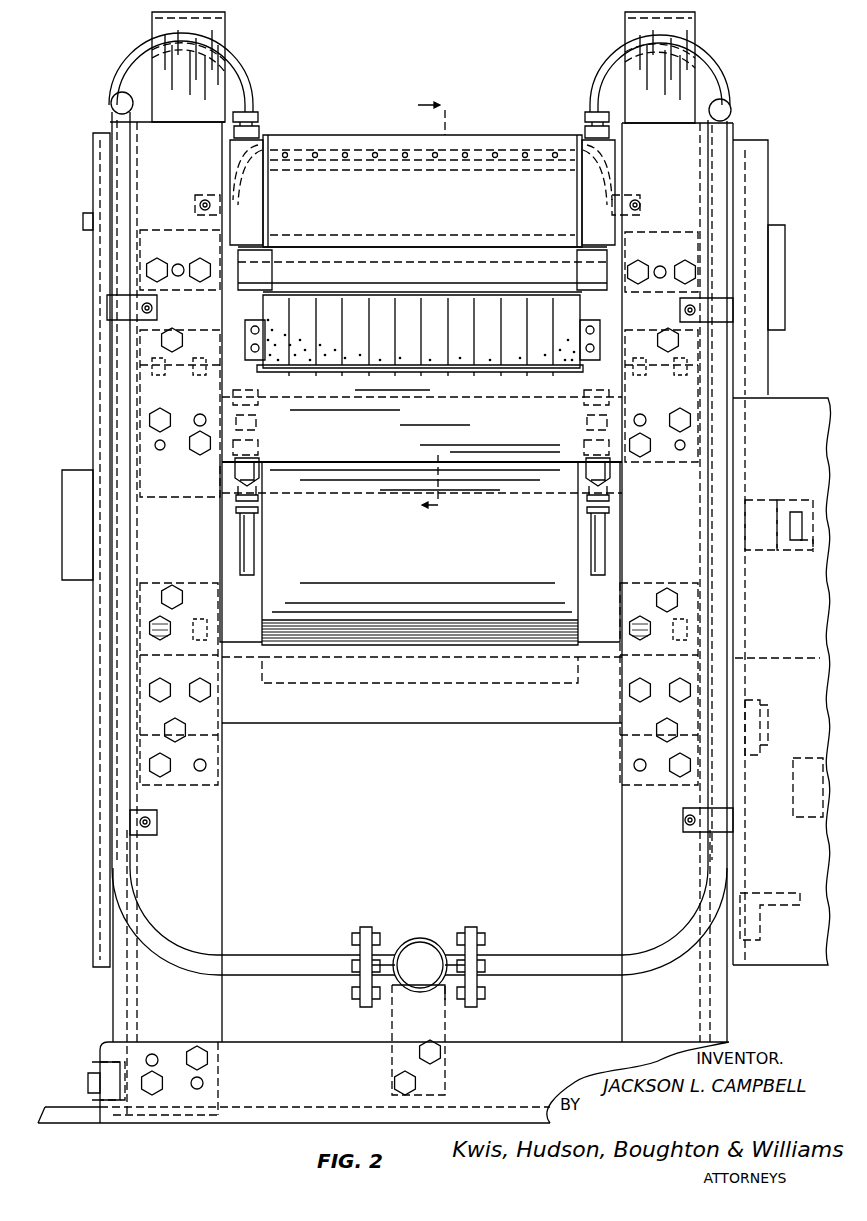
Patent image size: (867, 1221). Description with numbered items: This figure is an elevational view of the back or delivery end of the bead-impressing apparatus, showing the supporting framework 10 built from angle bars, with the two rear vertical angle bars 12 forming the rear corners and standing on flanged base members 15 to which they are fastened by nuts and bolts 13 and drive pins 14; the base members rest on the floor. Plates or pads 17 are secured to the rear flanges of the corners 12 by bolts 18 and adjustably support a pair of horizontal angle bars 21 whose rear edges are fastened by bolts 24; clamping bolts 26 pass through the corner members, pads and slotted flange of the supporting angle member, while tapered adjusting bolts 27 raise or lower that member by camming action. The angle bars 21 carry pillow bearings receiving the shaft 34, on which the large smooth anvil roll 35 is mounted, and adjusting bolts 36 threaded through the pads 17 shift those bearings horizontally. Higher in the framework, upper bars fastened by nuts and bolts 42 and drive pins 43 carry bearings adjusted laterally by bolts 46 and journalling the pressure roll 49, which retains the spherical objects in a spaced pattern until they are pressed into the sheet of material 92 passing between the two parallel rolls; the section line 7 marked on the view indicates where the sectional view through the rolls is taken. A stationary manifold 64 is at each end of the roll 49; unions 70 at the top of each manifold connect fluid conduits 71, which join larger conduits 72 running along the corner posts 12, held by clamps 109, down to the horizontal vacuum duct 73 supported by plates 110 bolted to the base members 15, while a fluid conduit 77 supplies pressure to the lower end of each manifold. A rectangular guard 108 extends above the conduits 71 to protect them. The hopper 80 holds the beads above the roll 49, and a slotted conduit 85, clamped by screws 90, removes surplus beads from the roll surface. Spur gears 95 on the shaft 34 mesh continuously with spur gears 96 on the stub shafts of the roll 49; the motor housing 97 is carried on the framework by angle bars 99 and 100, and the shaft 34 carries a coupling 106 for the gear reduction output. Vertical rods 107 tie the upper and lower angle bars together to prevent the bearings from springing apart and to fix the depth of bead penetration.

The supporting framework 10 is at (108, 1000).
The rear vertical angle bars 12 is at (220, 1022).
The nuts and bolts 13 is at (210, 1058).
The drive pins 14 is at (152, 1053).
The flanged base members 15 is at (318, 1042).
The plates or pads 17 is at (207, 772).
The bolts 18 is at (165, 778).
The angle bars 21 is at (392, 724).
The bolts 24 is at (212, 645).
The bolts 26 is at (212, 690).
The adjusting bolts 27 is at (187, 730).
The shaft 34 is at (245, 576).
The smooth surface drum or roll 35 is at (578, 620).
The adjusting bolts 36 is at (180, 586).
The nuts and bolts 42 is at (140, 392).
The drive pins 43 is at (158, 452).
The adjusting bolts 46 is at (184, 340).
The roll 49 is at (483, 295).
The stationary manifold 64 is at (230, 160).
The unions 70 is at (260, 122).
The fluid conduits 71 is at (252, 75).
The conduits 72 is at (150, 908).
The horizontally extending duct or conduit 73 is at (428, 940).
The fluid conduit 77 is at (258, 580).
The hopper 80 is at (398, 207).
The conduit 85 is at (490, 160).
The screws 90 is at (352, 158).
The sheet of material 92 is at (483, 375).
The spur gears 95 is at (92, 428).
The spur gears 96 is at (96, 186).
The housing and support 97 is at (780, 966).
The angle bar 99 is at (766, 692).
The angle bar 100 is at (780, 893).
The coupling 106 is at (792, 505).
The vertical bolts or rods 107 is at (813, 553).
The rectangular guard 108 is at (226, 28).
The clamps 109 is at (157, 836).
The plates 110 is at (446, 1034).
The section line 7 is at (424, 305).